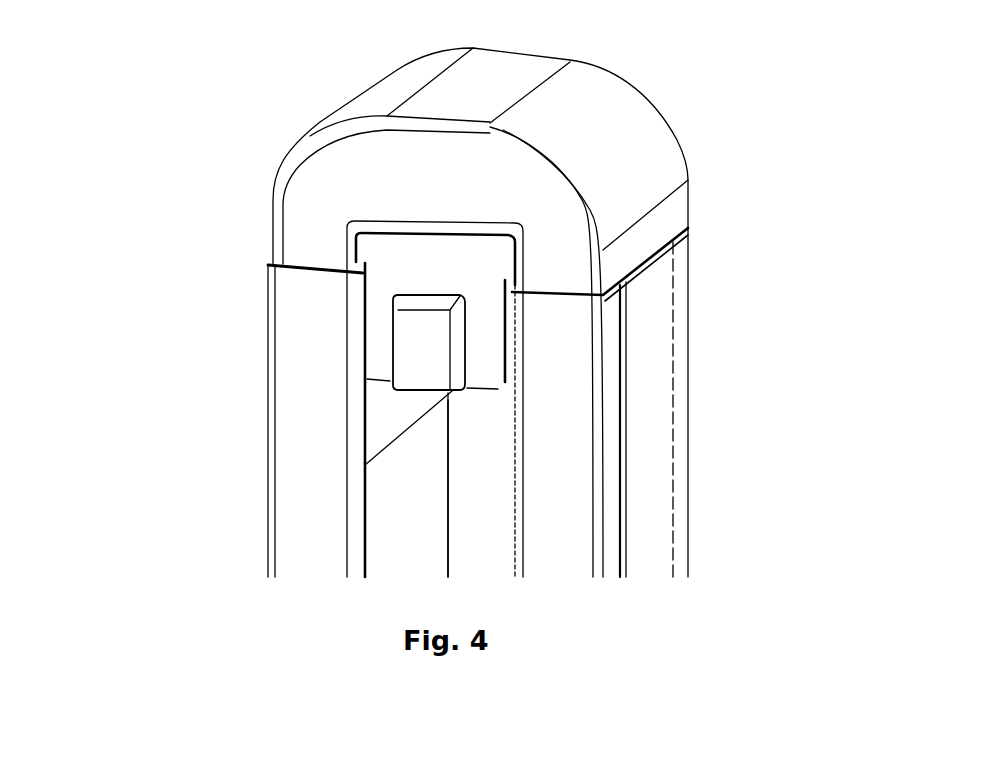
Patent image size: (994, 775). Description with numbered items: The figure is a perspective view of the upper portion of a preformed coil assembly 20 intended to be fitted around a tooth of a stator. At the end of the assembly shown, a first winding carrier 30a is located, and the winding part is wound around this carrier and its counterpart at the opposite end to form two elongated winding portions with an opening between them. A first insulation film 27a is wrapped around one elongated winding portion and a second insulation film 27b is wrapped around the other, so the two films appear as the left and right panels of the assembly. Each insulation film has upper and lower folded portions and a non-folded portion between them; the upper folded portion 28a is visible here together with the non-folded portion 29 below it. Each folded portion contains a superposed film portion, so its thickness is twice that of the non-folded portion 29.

The preformed coil assembly 20 is at (165, 190).
The first insulation film 27a is at (327, 377).
The second insulation film 27b is at (548, 373).
The upper folded portion 28a is at (400, 410).
The non-folded portion 29 is at (400, 489).
The first winding carrier 30a is at (470, 283).